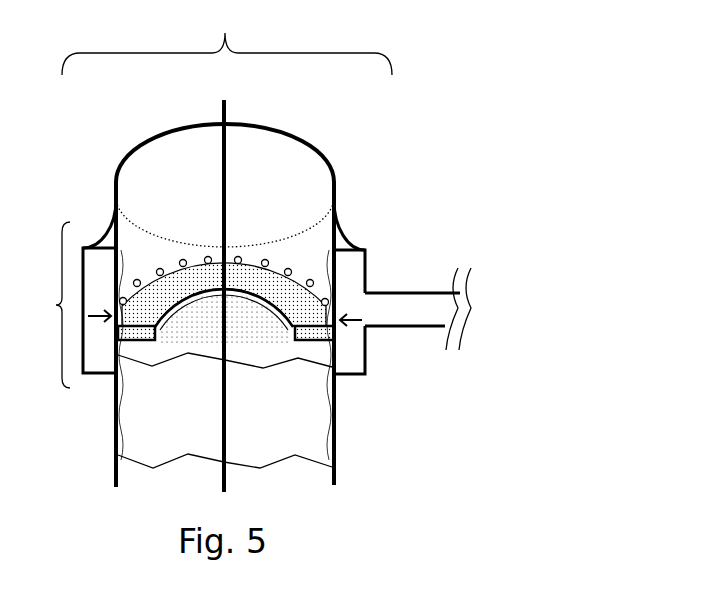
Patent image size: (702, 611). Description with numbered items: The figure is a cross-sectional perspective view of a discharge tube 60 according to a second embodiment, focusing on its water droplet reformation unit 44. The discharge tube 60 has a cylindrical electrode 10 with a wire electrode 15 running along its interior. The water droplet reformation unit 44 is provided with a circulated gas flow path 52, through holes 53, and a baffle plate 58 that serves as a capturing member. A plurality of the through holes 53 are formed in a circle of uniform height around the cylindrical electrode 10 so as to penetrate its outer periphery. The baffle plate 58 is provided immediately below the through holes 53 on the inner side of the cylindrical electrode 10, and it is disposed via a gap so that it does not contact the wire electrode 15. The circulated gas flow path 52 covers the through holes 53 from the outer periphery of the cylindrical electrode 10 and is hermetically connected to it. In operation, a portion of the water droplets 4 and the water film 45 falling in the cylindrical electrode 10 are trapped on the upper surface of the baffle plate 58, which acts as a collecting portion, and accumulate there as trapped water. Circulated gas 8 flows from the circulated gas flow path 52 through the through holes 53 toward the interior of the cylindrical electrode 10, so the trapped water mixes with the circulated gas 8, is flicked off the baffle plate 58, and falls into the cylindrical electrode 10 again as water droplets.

The discharge tube 60 is at (242, 26).
The wire electrode 15 is at (228, 106).
The water droplets 4 is at (188, 330).
The through holes 53 is at (265, 262).
The circulated gas flow path 52 is at (101, 240).
The water film 45 is at (352, 238).
The circulated gas 8 is at (360, 306).
The water droplet reformation unit 44 is at (43, 317).
The baffle plate 58 is at (104, 376).
The cylindrical electrode 10 is at (336, 420).